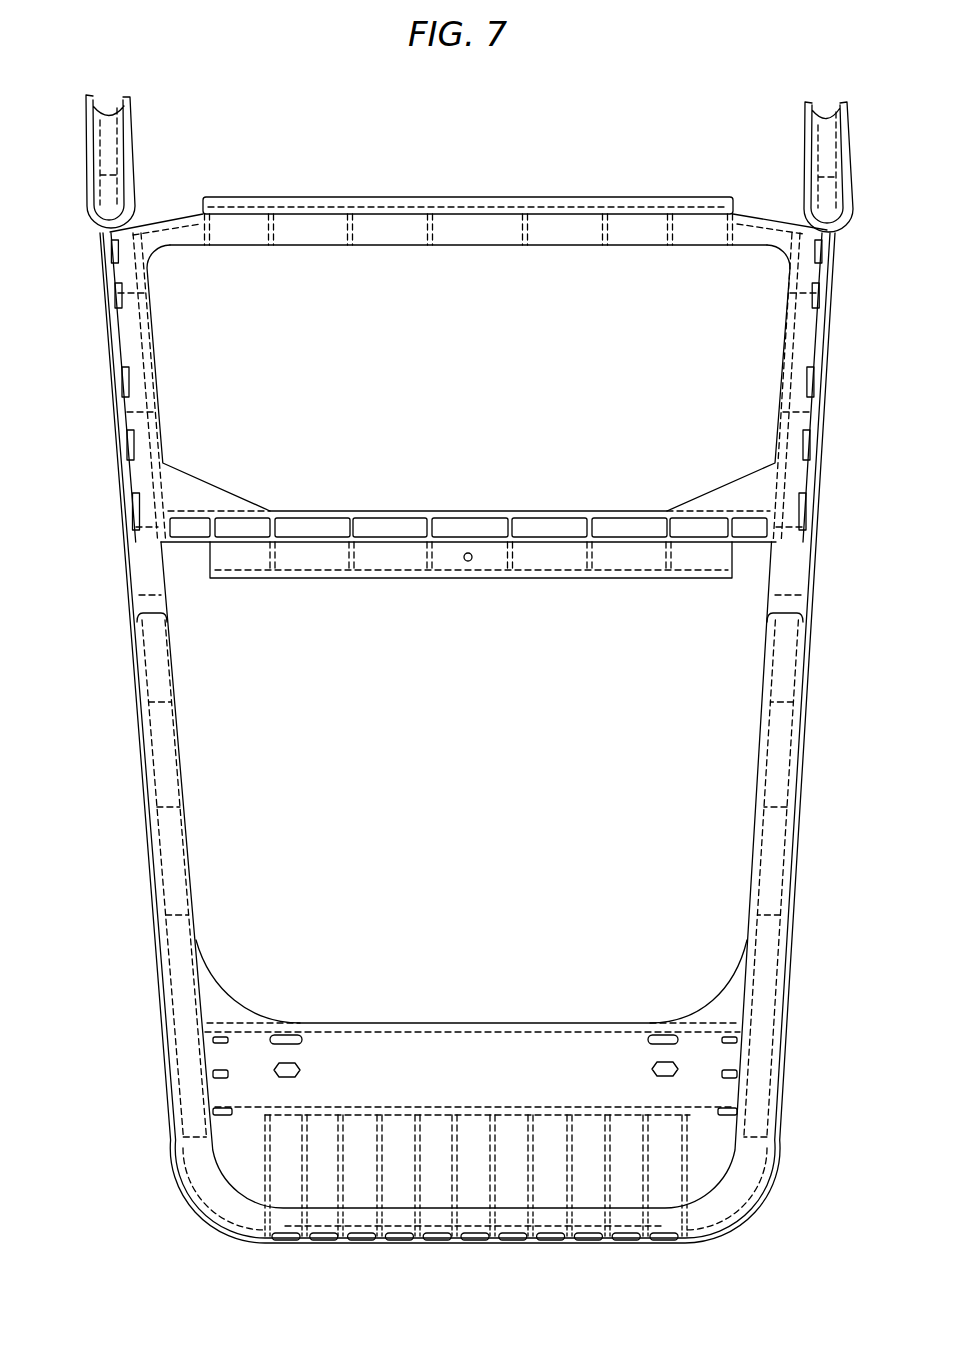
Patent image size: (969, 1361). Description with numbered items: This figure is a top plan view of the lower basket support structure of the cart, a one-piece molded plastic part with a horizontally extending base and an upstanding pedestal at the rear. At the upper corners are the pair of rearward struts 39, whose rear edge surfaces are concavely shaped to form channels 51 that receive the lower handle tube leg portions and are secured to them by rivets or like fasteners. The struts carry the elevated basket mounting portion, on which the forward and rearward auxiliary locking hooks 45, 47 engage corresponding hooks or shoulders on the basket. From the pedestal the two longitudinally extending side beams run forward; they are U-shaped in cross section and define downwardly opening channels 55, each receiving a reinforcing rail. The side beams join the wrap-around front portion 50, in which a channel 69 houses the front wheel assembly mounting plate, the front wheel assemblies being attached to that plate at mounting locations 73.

The rearward struts 39 is at (83, 190).
The channels 51 is at (118, 157).
The rearward auxiliary locking hook 47 is at (504, 198).
The forward auxiliary locking hook 45 is at (503, 579).
The downwardly opening channels 55 is at (133, 697).
The channel 69 is at (300, 1025).
The mounting locations 73 is at (300, 1065).
The wrap-around front portion 50 is at (688, 1236).